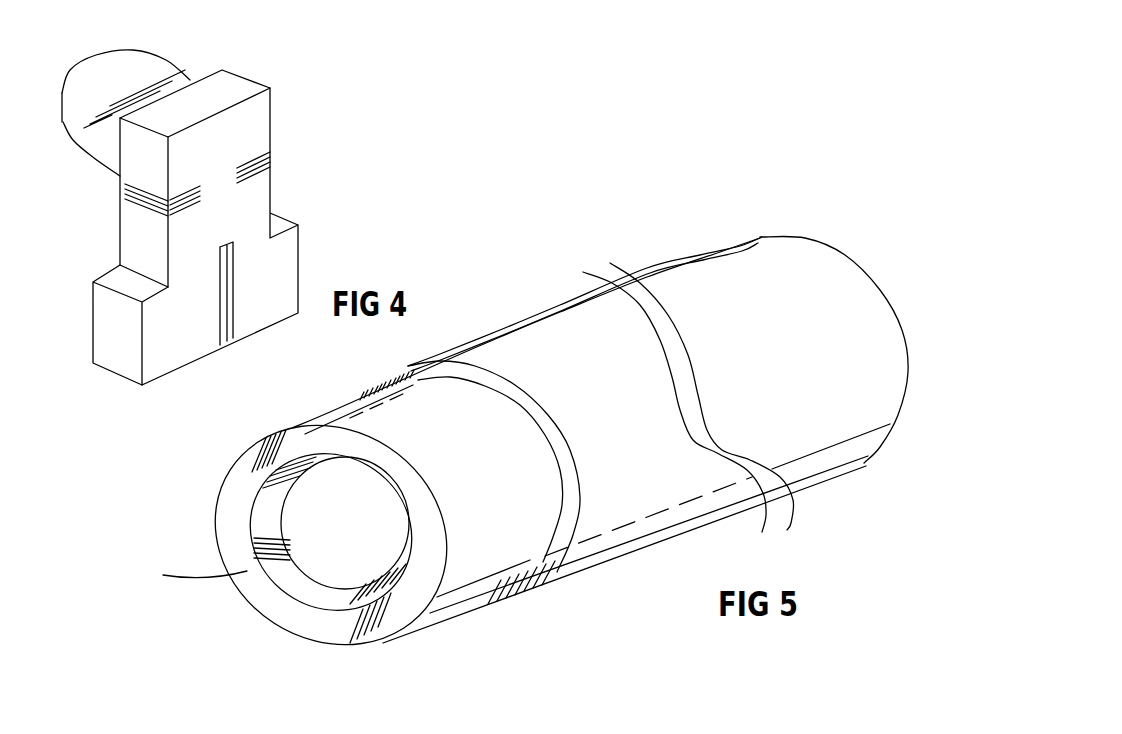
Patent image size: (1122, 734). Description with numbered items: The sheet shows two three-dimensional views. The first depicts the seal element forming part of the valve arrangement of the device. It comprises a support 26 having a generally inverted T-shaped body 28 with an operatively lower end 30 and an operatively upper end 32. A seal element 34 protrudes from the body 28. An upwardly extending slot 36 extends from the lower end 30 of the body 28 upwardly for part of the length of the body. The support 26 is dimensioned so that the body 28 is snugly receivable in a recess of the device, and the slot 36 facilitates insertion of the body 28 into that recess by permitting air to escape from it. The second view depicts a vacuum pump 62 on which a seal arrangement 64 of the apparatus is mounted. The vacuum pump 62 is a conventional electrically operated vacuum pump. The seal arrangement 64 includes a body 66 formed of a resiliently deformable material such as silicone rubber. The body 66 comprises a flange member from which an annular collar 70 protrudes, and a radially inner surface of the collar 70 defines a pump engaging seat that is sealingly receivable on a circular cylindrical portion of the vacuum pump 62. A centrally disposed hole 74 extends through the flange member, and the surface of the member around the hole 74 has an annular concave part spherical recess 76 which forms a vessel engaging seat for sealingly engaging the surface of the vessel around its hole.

In FIG. 4, the support 26 is at (296, 110).
In FIG. 4, the body 28 is at (237, 150).
In FIG. 4, the lower end 30 is at (177, 368).
In FIG. 4, the upper end 32 is at (222, 92).
In FIG. 4, the seal element 34 is at (93, 113).
In FIG. 4, the slot 36 is at (238, 281).
In FIG. 5, the vacuum pump 62 is at (687, 285).
In FIG. 5, the seal arrangement 64 is at (290, 637).
In FIG. 5, the body 66 is at (402, 641).
In FIG. 5, the annular collar 70 is at (480, 550).
In FIG. 5, the hole 74 is at (345, 535).
In FIG. 5, the recess 76 is at (290, 577).